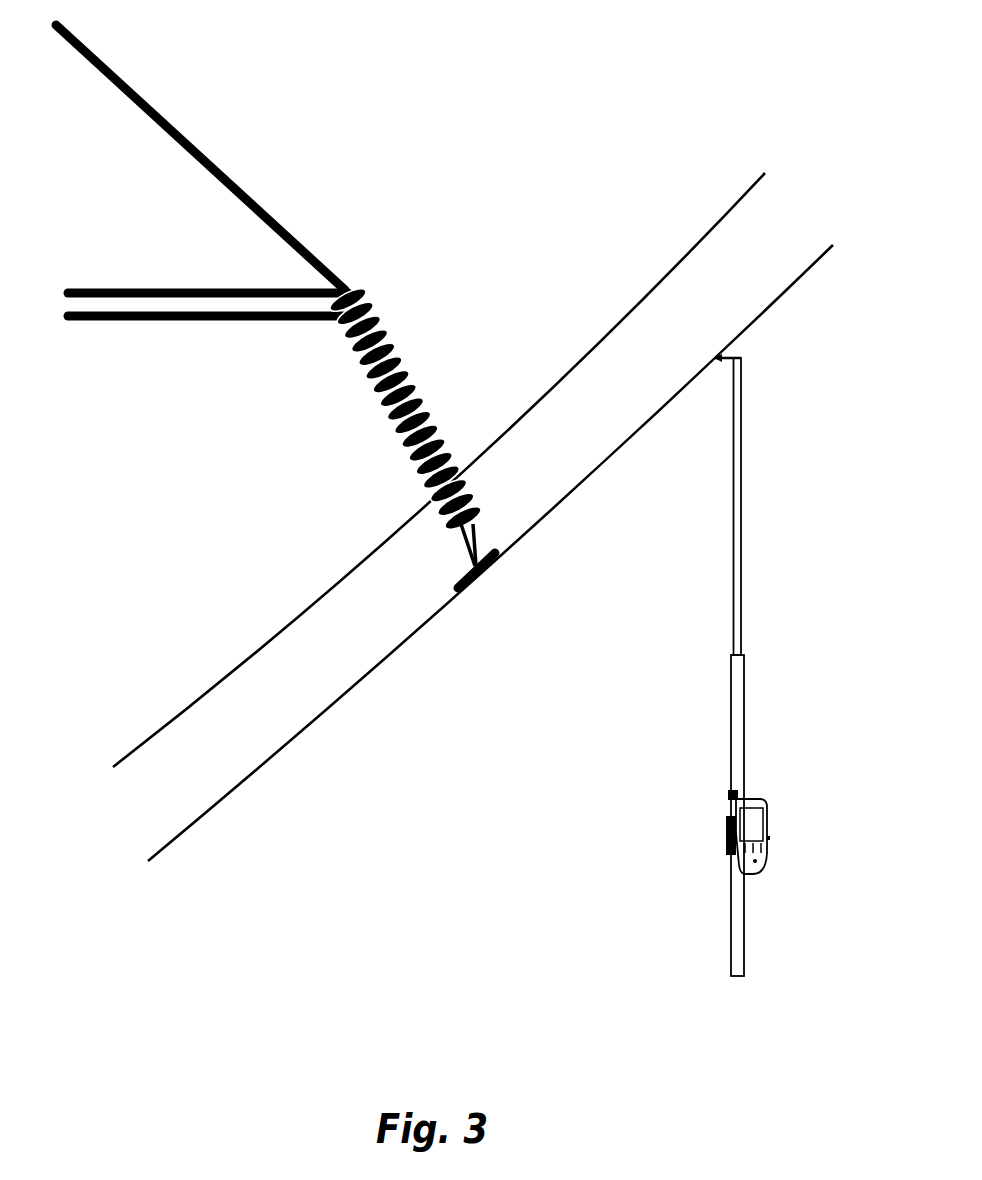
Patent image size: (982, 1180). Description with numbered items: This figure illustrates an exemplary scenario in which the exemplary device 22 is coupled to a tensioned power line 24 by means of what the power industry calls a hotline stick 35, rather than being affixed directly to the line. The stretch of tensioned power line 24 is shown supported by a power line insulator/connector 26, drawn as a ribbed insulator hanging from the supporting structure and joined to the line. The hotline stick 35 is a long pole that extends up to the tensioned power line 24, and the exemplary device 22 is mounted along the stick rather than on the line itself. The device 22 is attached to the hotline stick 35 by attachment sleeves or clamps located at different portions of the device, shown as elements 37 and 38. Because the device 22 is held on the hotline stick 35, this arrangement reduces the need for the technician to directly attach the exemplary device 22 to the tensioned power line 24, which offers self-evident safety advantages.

The exemplary device 22 is at (768, 832).
The tensioned power line 24 is at (690, 188).
The power line insulator/connector 26 is at (407, 364).
The hotline stick 35 is at (753, 597).
The attachment sleeve/clamp 37 is at (721, 790).
The attachment sleeve/clamp 38 is at (723, 840).